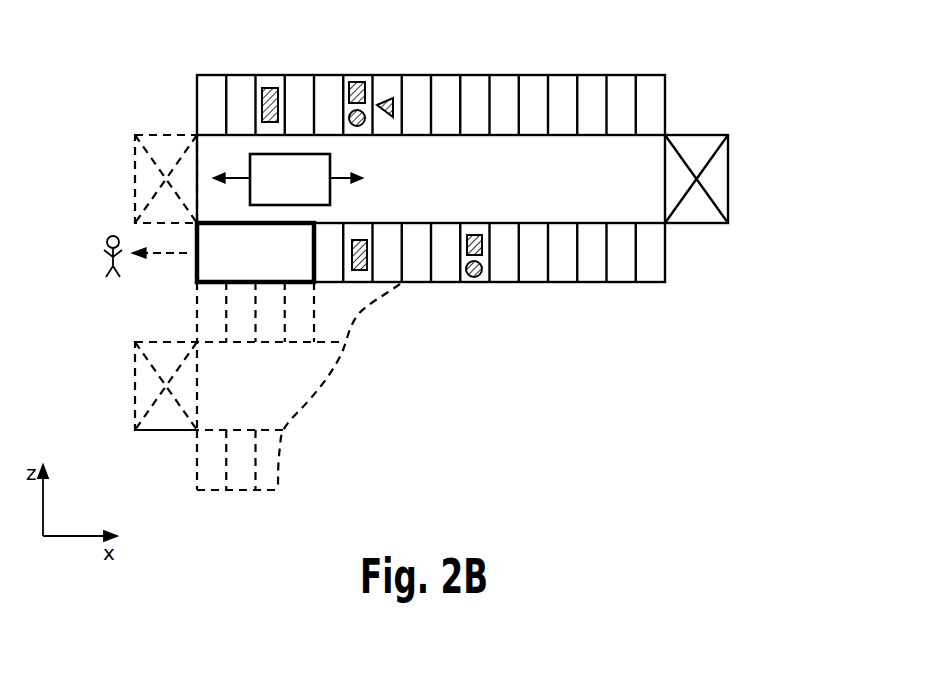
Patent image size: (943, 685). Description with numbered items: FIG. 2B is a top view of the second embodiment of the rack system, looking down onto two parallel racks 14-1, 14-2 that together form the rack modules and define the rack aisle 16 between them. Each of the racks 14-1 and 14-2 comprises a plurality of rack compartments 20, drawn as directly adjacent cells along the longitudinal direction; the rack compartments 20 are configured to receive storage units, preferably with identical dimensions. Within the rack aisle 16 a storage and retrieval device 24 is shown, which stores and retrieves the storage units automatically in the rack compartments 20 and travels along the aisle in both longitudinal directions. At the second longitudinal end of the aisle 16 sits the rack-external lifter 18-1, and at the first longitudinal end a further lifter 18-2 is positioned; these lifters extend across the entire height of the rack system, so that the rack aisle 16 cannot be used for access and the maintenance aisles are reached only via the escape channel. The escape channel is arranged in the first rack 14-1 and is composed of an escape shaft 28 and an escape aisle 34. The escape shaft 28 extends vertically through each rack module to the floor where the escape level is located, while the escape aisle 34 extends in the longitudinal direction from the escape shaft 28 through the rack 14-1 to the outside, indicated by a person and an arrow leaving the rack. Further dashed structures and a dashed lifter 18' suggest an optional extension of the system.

The rack compartment 20 is at (210, 75).
The first rack 14-1 is at (680, 253).
The second rack 14-2 is at (680, 100).
The rack aisle 16 is at (437, 193).
The rack-external lifter 18-1 is at (728, 178).
The further lifter 18-2 is at (135, 176).
The additional transfer station 18' is at (133, 386).
The storage and retrieval device 24 is at (302, 191).
The escape shaft 28 is at (298, 266).
The escape aisle 34 is at (238, 266).